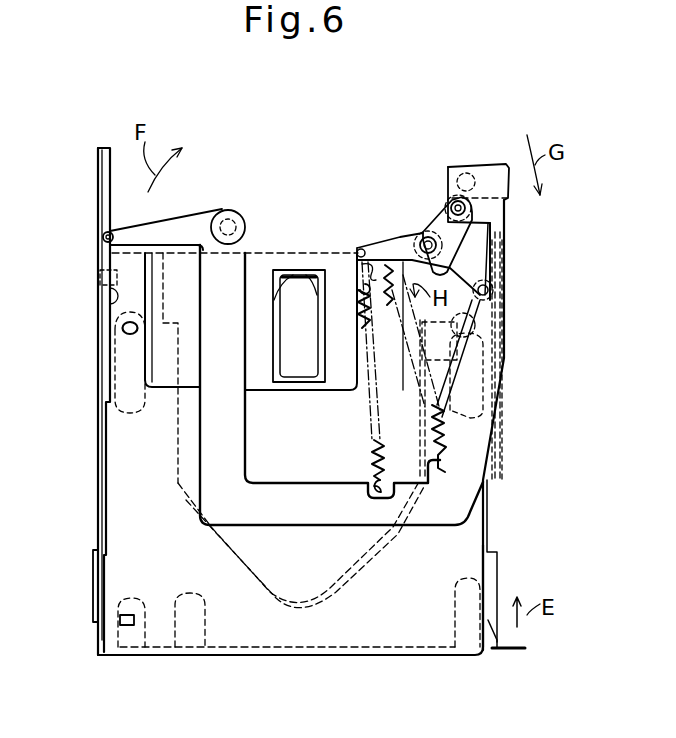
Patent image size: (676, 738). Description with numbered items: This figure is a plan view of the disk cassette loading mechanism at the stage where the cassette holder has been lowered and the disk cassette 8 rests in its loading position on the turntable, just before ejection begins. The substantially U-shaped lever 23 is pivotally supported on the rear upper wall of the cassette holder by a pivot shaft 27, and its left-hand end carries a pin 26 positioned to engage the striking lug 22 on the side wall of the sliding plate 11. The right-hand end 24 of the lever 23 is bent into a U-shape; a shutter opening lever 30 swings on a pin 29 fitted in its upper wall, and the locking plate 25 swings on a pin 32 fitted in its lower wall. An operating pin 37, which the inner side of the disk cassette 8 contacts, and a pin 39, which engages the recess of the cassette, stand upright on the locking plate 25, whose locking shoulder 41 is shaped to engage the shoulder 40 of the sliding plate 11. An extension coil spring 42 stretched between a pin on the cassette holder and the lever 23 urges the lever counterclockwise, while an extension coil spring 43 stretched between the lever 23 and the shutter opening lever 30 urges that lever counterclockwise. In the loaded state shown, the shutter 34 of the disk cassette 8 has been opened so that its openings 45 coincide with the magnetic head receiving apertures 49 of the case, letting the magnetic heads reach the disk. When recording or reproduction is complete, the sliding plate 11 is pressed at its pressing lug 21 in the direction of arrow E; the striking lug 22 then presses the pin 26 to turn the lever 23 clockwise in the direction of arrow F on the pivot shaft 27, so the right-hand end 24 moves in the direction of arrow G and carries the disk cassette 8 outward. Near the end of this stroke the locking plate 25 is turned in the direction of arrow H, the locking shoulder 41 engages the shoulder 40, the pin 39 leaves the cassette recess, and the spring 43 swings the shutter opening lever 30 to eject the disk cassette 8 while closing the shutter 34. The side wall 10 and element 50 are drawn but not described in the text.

The disk cassette 8 is at (402, 628).
The side wall 10 is at (500, 355).
The sliding plate 11 is at (98, 570).
The pressing lug 21 is at (510, 652).
The striking lug 22 is at (100, 279).
The lever 23 is at (450, 518).
The right-hand end 24 is at (490, 168).
The locking plate 25 is at (450, 212).
The pin 26 is at (104, 235).
The pivot shaft 27 is at (230, 208).
The pin 29 is at (440, 215).
The shutter opening lever 30 is at (373, 247).
The pin 32 is at (464, 178).
The shutter 34 is at (258, 258).
The operating pin 37 is at (425, 240).
The pin 39 is at (505, 292).
The shoulder 40 is at (505, 318).
The locking shoulder 41 is at (490, 252).
The extension coil spring 42 is at (370, 455).
The extension coil spring 43 is at (447, 420).
The openings 45 is at (288, 290).
The magnetic head receiving apertures 49 is at (308, 278).
The slot 50 is at (500, 276).